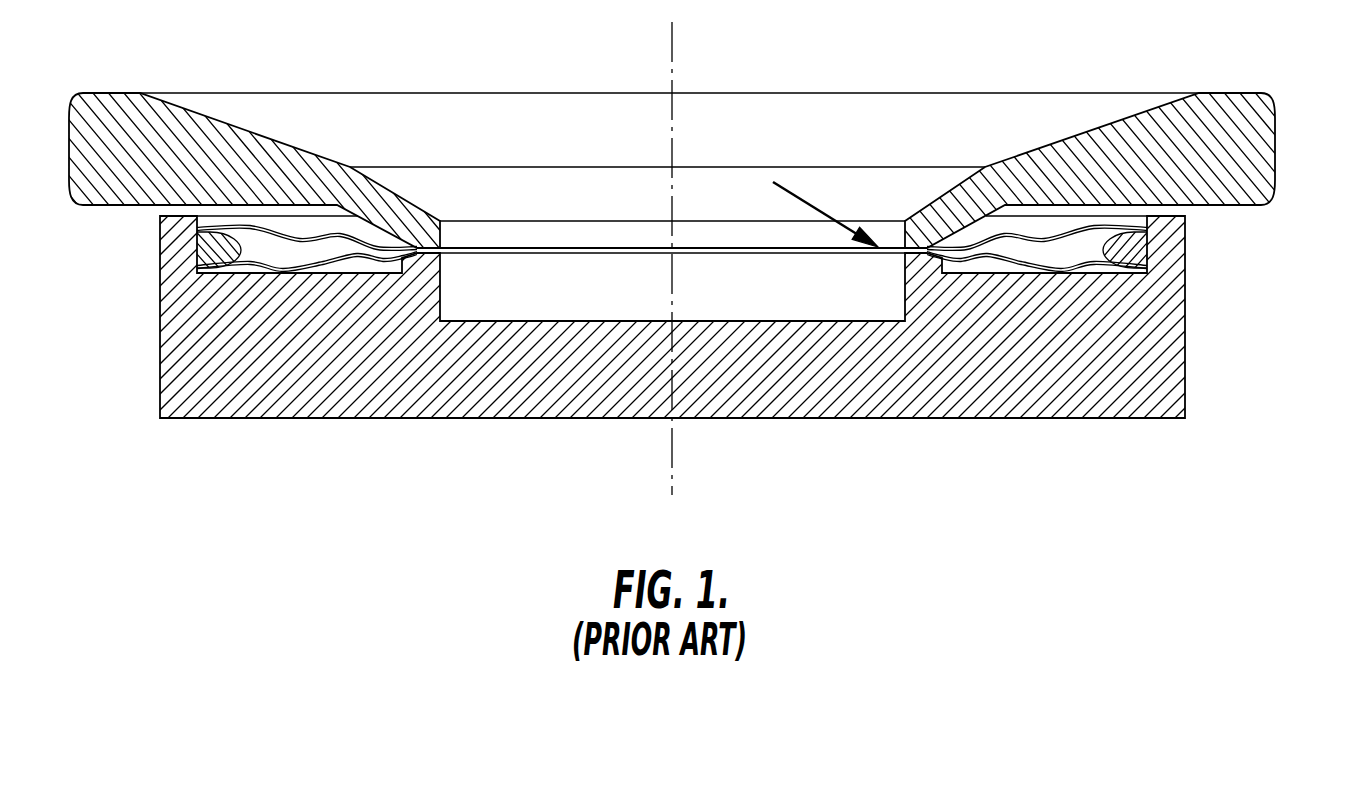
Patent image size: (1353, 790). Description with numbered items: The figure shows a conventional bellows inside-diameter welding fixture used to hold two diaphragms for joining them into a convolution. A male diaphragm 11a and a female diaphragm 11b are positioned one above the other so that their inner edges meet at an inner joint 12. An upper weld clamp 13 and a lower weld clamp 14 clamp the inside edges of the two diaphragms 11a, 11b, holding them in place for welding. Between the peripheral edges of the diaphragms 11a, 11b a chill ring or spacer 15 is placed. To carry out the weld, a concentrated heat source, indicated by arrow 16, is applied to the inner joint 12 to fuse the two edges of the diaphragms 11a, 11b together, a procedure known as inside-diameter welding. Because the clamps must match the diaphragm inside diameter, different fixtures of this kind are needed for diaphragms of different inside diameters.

The male diaphragm 11a is at (1087, 250).
The female diaphragm 11b is at (1012, 235).
The inner joint 12 is at (902, 253).
The upper weld clamp 13 is at (1230, 148).
The lower weld clamp 14 is at (1142, 343).
The chill ring or spacer 15 is at (1143, 253).
The concentrated heat source 16 is at (815, 207).